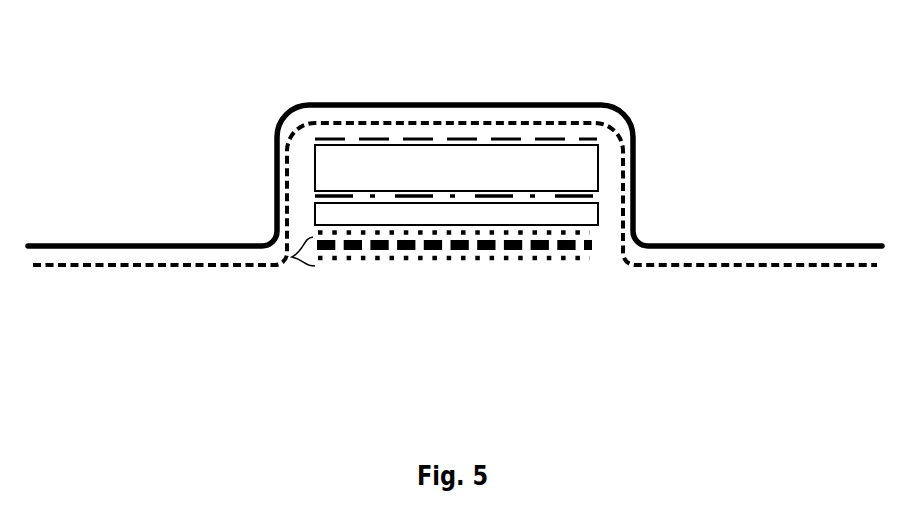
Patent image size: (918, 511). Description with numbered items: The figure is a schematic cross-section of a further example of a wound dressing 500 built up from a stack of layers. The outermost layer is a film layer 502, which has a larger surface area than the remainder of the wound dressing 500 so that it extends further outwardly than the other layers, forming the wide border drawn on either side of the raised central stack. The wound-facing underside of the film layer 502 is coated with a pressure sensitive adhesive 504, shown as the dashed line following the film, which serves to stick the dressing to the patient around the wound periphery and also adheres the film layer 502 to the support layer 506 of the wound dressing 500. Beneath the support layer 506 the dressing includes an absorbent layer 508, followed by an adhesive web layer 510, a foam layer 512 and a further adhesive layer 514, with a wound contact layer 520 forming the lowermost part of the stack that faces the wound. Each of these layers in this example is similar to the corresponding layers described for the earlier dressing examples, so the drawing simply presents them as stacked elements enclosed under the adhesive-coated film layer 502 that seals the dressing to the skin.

The wound dressing 500 is at (283, 80).
The film layer 502 is at (603, 103).
The pressure sensitive adhesive 504 is at (722, 265).
The support layer 506 is at (514, 139).
The absorbent layer 508 is at (582, 169).
The adhesive web layer 510 is at (320, 197).
The foam layer 512 is at (582, 217).
The further adhesive layer 514 is at (513, 231).
The wound contact layer 520 is at (292, 257).